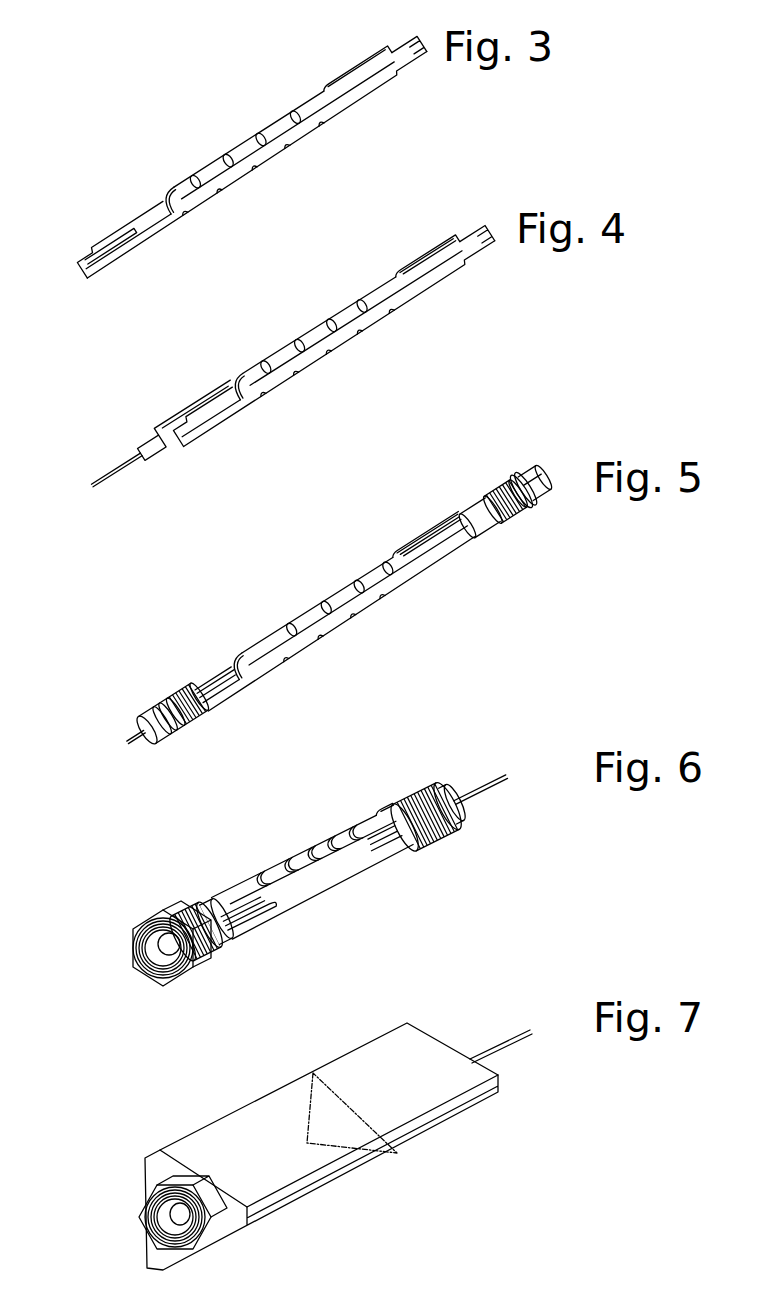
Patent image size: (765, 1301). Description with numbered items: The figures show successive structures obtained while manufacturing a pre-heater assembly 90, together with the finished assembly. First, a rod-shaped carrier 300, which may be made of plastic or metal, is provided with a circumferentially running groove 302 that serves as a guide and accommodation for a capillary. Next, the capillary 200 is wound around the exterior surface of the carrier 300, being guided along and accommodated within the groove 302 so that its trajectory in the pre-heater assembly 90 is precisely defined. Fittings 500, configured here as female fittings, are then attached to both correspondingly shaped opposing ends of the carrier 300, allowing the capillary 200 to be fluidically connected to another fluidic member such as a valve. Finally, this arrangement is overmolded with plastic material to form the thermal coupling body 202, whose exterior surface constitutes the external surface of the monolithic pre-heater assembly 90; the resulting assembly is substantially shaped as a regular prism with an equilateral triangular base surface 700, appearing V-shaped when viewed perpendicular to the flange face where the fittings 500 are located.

In FIG. 7, the pre-heater assembly 90 is at (108, 1179).
In FIG. 4, the capillary 200 is at (207, 393).
In FIG. 5, the capillary 200 is at (230, 680).
In FIG. 6, the capillary 200 is at (280, 860).
In FIG. 7, the capillary 200 is at (500, 1043).
In FIG. 7, the thermal coupling body 202 is at (433, 1053).
In FIG. 3, the carrier 300 is at (333, 112).
In FIG. 4, the carrier 300 is at (433, 278).
In FIG. 5, the carrier 300 is at (427, 557).
In FIG. 6, the carrier 300 is at (367, 860).
In FIG. 3, the groove 302 is at (218, 192).
In FIG. 5, the fittings 500 is at (520, 468).
In FIG. 6, the fittings 500 is at (410, 792).
In FIG. 7, the fittings 500 is at (120, 1212).
In FIG. 7, the equilateral triangular base surface 700 is at (327, 1110).